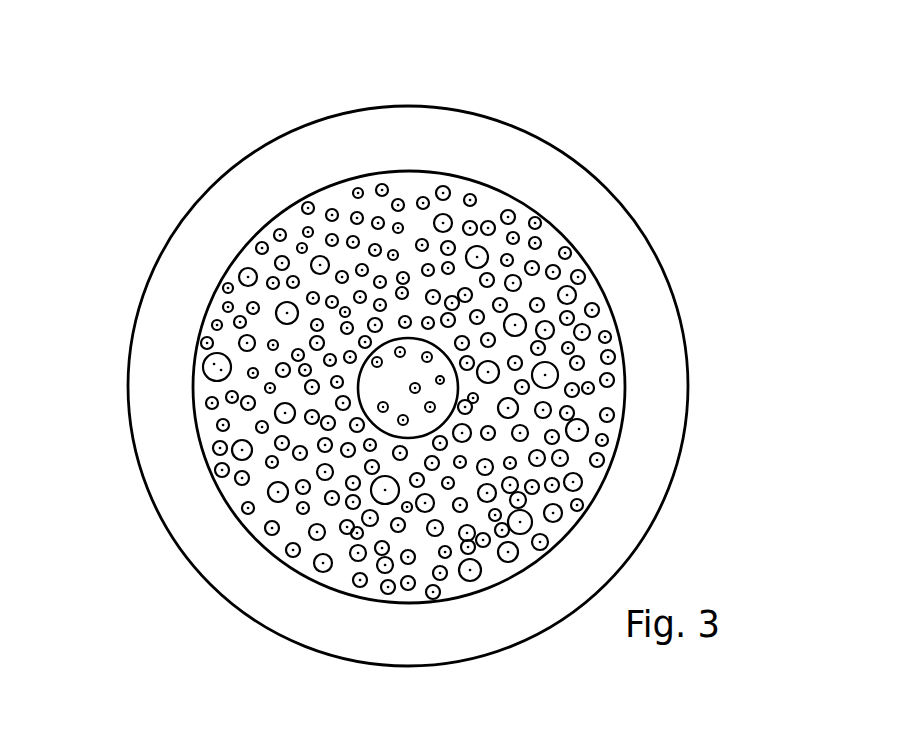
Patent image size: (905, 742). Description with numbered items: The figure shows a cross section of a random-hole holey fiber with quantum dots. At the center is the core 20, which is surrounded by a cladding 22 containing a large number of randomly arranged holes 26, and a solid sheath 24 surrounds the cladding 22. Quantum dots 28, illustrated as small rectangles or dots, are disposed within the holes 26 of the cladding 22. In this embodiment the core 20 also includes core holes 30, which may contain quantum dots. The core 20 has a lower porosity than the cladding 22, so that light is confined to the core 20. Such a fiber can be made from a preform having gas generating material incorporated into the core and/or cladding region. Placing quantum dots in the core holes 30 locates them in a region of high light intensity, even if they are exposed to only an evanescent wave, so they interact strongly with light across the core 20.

The core 20 is at (440, 346).
The cladding 22 is at (300, 202).
The solid sheath 24 is at (462, 145).
The holes 26 is at (575, 427).
The quantum dots 28 is at (585, 328).
The core holes 30 is at (411, 384).